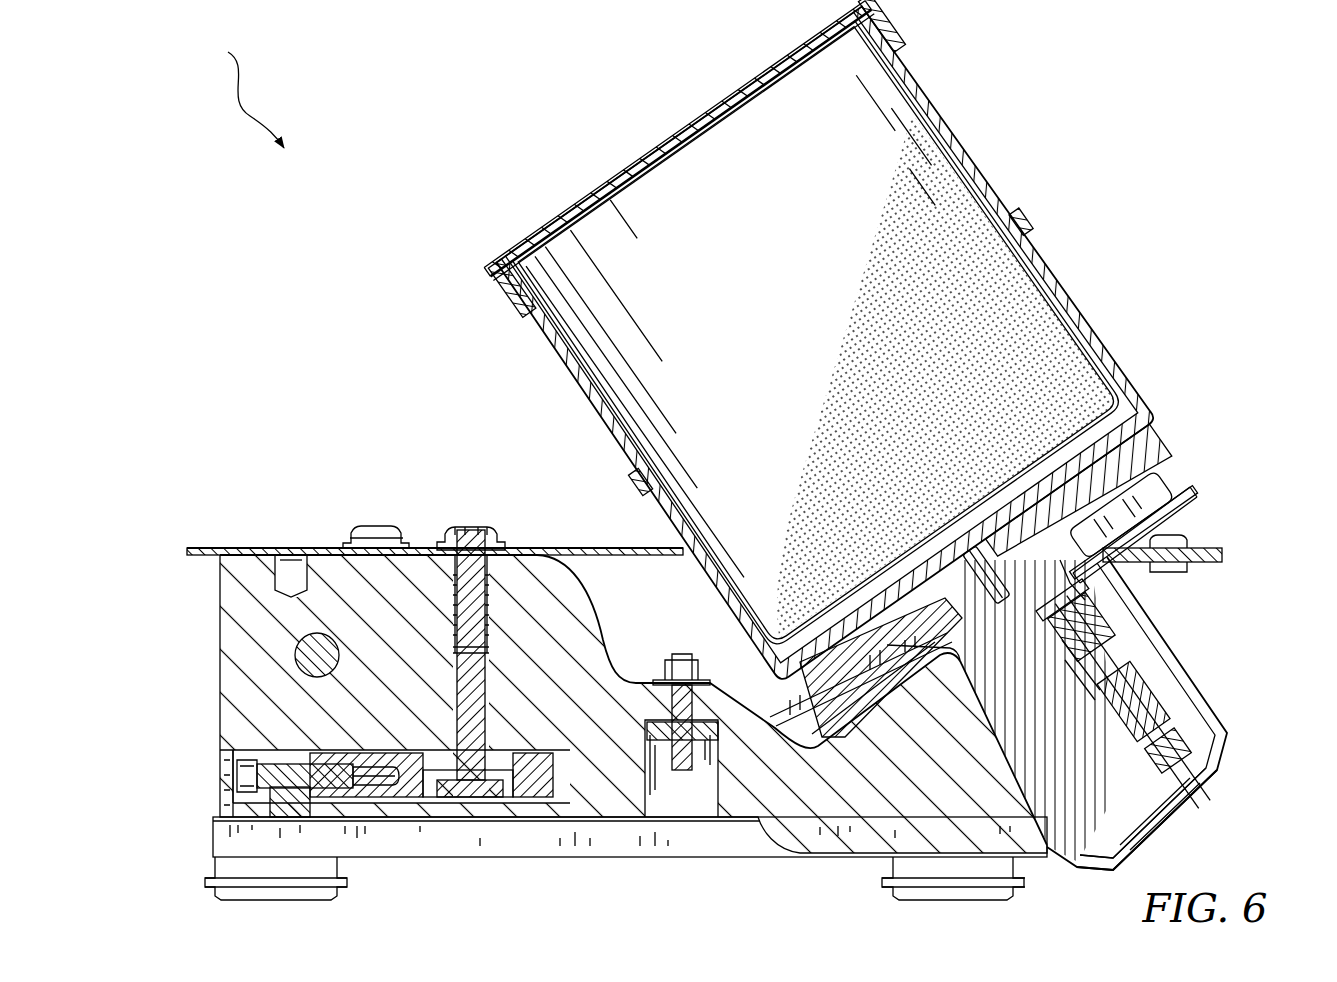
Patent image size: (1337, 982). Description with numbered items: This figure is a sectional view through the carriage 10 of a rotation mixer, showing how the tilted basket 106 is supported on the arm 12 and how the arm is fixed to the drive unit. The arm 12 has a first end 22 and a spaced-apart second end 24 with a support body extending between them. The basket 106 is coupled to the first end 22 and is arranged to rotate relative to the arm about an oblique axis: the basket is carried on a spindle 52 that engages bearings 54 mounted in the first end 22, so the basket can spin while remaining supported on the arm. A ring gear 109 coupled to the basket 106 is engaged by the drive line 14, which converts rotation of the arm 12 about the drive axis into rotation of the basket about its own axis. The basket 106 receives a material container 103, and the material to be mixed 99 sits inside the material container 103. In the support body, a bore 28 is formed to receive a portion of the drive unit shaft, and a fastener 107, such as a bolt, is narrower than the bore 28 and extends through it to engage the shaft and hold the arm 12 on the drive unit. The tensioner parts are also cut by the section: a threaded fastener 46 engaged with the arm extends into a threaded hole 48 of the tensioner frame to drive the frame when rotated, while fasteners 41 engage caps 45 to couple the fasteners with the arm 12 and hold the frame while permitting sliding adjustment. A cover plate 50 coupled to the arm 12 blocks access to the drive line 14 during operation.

The carriage 10 is at (235, 90).
The arm 12 is at (358, 586).
The drive line 14 is at (205, 840).
The first end 22 is at (1207, 631).
The second end 24 is at (236, 607).
The bore 28 is at (668, 803).
The fasteners 41 is at (463, 633).
The caps 45 is at (470, 524).
The threaded fastener 46 is at (318, 784).
The threaded hole 48 is at (374, 790).
The cover plate 50 is at (256, 541).
The spindle 52 is at (1099, 718).
The bearings 54 is at (1203, 792).
The material to be mixed 99 is at (927, 422).
The material container 103 is at (916, 81).
The basket 106 is at (1101, 322).
The fastener 107 is at (681, 638).
The ring gear 109 is at (1147, 462).